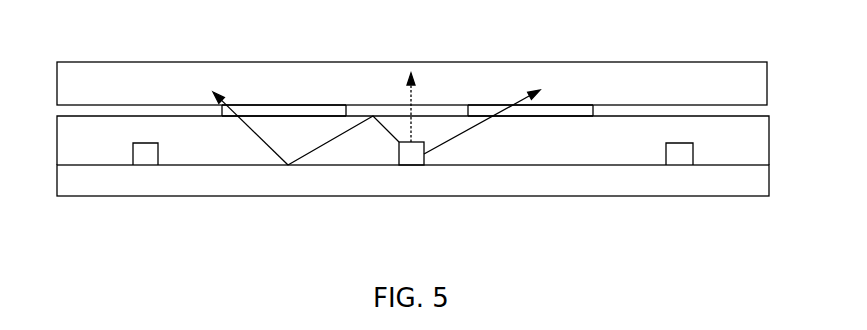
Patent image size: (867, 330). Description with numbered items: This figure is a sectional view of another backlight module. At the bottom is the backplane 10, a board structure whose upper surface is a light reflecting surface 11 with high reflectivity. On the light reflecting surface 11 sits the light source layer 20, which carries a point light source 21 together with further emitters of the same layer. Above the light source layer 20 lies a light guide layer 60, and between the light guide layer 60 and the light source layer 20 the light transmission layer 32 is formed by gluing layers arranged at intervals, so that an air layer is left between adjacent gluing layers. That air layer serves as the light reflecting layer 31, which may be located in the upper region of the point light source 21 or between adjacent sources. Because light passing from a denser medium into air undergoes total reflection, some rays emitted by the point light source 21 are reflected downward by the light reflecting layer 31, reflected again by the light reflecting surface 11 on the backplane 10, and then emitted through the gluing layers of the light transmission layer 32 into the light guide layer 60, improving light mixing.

The backplane 10 is at (295, 182).
The light reflecting surface 11 is at (205, 165).
The light source layer 20 is at (500, 153).
The point light source 21 is at (408, 163).
The light reflecting layer 31 is at (406, 110).
The light transmission layer 32 is at (306, 110).
The light guide layer 60 is at (493, 78).